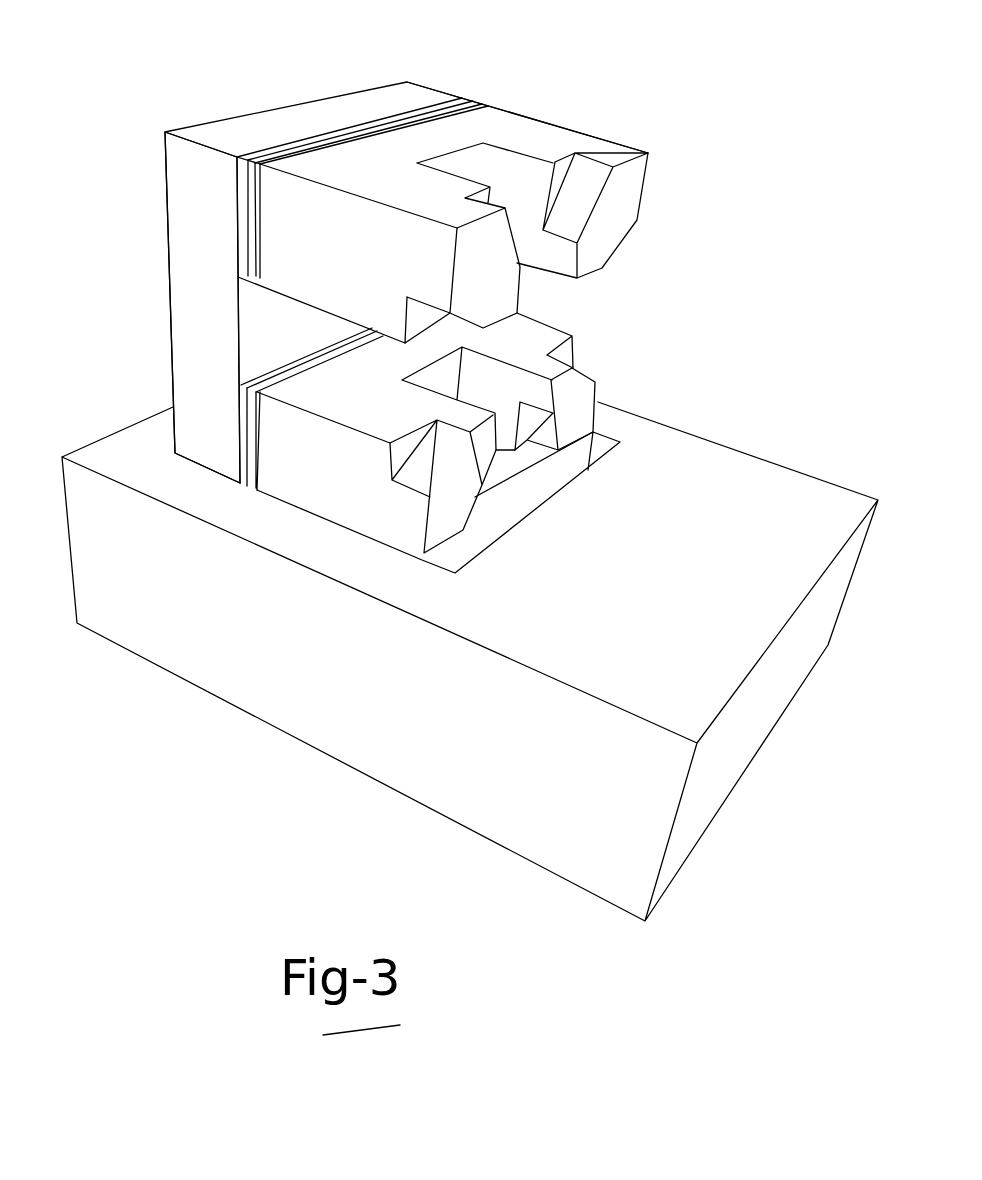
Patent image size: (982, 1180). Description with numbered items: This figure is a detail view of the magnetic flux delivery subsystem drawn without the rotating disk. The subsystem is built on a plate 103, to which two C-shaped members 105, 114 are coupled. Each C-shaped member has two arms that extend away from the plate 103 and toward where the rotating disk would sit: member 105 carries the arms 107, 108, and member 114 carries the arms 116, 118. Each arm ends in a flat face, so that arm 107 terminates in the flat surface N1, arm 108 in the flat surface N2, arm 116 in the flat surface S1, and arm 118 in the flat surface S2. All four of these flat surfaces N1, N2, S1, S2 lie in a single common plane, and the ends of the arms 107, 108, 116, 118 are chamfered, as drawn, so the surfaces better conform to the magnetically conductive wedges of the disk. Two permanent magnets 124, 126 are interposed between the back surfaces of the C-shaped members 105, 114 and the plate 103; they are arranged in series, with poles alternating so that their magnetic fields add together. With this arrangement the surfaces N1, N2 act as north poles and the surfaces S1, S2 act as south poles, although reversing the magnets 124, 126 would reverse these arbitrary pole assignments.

The plate 103 is at (322, 122).
The permanent magnet 124 is at (438, 107).
The arm 107 is at (499, 155).
The arm 116 is at (379, 253).
The arm 108 is at (591, 359).
The arm 118 is at (438, 502).
The permanent magnet 126 is at (247, 434).
The C-shaped member 105 is at (387, 155).
The C-shaped member 114 is at (343, 376).
The flat surface S1 is at (413, 247).
The flat surface S2 is at (443, 484).
The flat surface N1 is at (582, 215).
The flat surface N2 is at (556, 409).